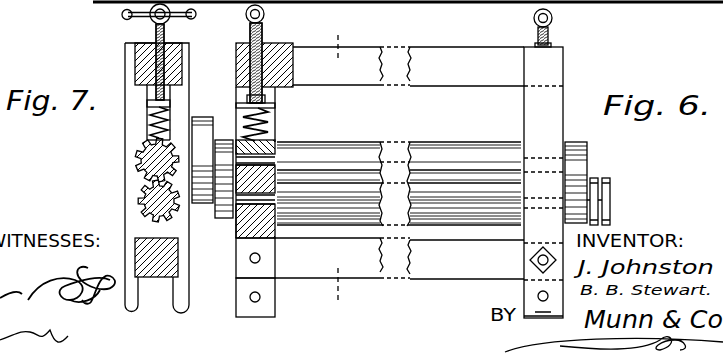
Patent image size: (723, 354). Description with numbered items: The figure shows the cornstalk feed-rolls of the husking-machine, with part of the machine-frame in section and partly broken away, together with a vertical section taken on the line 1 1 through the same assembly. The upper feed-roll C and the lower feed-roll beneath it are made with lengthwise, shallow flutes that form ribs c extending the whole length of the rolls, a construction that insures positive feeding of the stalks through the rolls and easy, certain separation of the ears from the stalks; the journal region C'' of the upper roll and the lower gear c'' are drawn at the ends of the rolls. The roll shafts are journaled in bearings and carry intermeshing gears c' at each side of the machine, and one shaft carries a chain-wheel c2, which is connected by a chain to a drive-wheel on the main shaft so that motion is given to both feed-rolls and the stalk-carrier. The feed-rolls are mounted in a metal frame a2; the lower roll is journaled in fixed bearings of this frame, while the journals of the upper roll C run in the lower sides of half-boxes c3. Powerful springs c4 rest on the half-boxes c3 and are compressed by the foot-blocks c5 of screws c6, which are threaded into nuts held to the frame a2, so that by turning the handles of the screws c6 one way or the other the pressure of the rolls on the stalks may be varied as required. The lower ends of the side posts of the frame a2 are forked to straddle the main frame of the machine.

In FIG. 7, the frame a2 is at (135, 246).
In FIG. 6, the frame a2 is at (399, 180).
In FIG. 6, the upper feed-roll C is at (399, 173).
In FIG. 6, the roller journal C'' is at (405, 231).
In FIG. 7, the ribs c is at (133, 184).
In FIG. 6, the ribs c is at (412, 179).
In FIG. 7, the intermeshing gears c' is at (141, 160).
In FIG. 6, the intermeshing gears c' is at (399, 185).
In FIG. 7, the lower gear c'' is at (140, 201).
In FIG. 7, the chain-wheel c2 is at (135, 62).
In FIG. 6, the chain-wheel c2 is at (620, 197).
In FIG. 7, the half-boxes c3 is at (147, 141).
In FIG. 6, the half-boxes c3 is at (275, 144).
In FIG. 7, the springs c4 is at (151, 125).
In FIG. 6, the springs c4 is at (268, 127).
In FIG. 7, the foot-blocks c5 is at (150, 104).
In FIG. 6, the foot-blocks c5 is at (247, 101).
In FIG. 7, the screws c6 is at (164, 30).
In FIG. 6, the screws c6 is at (549, 32).
In FIG. 6, the section line 1 is at (335, 169).